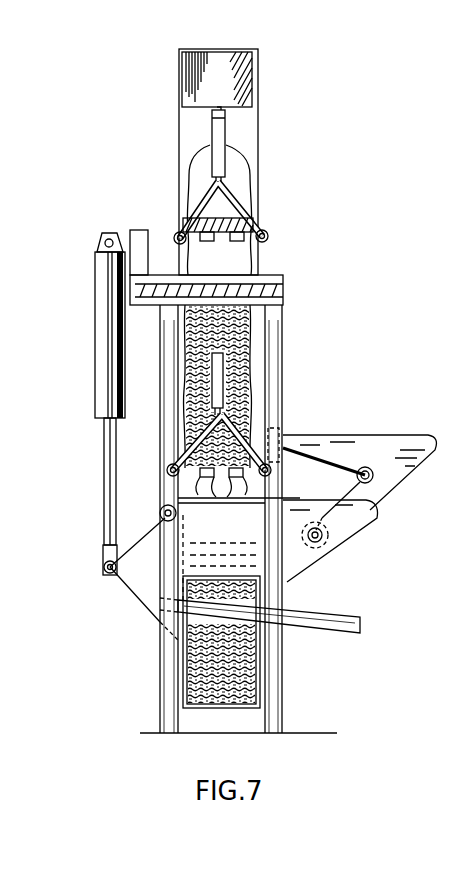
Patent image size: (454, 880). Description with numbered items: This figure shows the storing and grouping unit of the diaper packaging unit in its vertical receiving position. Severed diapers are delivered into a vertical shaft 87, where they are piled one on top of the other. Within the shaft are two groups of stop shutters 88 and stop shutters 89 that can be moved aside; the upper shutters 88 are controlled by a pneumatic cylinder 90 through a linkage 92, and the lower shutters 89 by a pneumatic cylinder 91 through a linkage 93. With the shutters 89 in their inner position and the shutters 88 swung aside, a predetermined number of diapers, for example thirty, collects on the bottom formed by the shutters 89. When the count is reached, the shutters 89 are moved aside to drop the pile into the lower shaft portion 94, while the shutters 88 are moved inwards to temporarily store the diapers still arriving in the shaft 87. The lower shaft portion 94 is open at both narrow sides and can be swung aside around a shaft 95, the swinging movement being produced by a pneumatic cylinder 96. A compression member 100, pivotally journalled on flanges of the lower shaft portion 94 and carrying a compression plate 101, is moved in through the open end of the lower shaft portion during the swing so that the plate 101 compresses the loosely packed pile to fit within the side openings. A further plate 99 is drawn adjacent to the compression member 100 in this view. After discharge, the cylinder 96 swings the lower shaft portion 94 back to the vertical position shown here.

The vertical shaft 87 is at (257, 132).
The stop shutters 88 is at (233, 241).
The stop shutters 89 is at (234, 478).
The pneumatic cylinder 90 is at (213, 160).
The pneumatic cylinder 91 is at (247, 378).
The linkage 92 is at (238, 208).
The linkage 93 is at (257, 432).
The lower shaft portion 94 is at (178, 660).
The shaft 95 is at (163, 508).
The pneumatic cylinder 96 is at (97, 344).
The lower cam plate 99 is at (338, 537).
The compression member 100 is at (368, 447).
The compression plate 101 is at (287, 470).